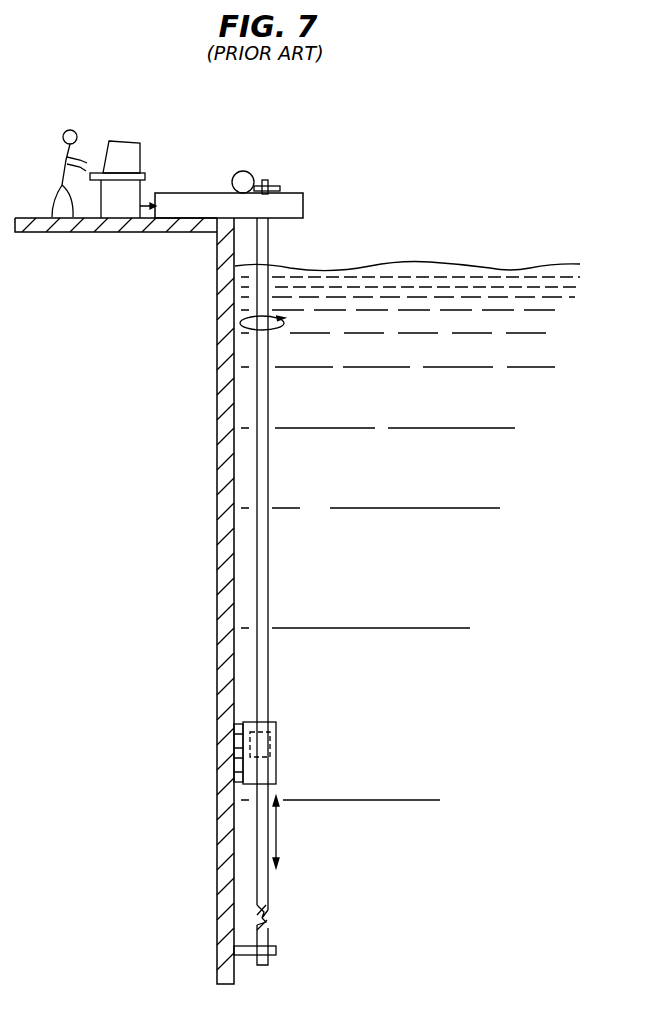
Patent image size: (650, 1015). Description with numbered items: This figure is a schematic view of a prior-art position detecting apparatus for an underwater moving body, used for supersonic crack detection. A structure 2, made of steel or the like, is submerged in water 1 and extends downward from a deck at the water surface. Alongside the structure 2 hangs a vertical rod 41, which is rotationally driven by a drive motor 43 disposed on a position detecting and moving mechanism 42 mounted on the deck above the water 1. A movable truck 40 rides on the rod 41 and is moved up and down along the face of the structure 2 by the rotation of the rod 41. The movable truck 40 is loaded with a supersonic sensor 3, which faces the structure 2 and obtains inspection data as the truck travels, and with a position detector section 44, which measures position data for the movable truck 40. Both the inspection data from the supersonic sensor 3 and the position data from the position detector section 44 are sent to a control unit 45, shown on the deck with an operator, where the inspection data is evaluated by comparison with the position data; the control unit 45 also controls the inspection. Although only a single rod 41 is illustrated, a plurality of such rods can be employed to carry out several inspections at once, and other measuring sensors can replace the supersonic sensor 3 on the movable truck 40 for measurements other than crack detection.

The water 1 is at (509, 274).
The structure 2 is at (218, 542).
The supersonic sensor 3 is at (224, 757).
The movable truck 40 is at (277, 772).
The rod 41 is at (268, 538).
The position detecting and moving mechanism 42 is at (308, 191).
The drive motor 43 is at (253, 172).
The position detector section 44 is at (265, 735).
The control unit 45 is at (128, 141).